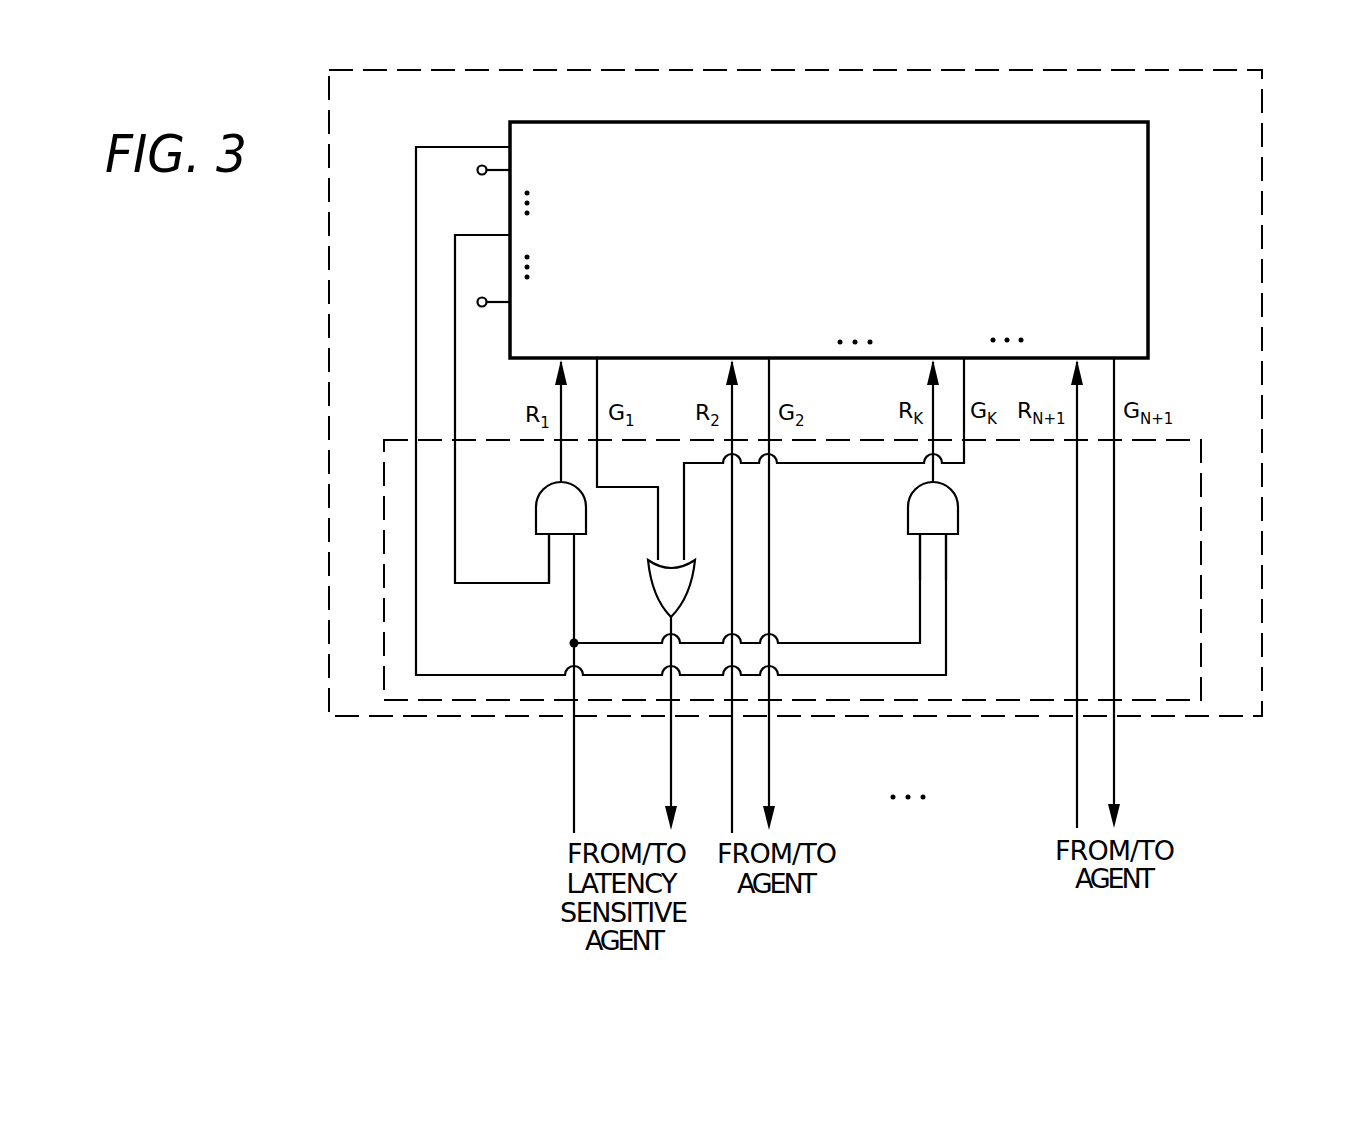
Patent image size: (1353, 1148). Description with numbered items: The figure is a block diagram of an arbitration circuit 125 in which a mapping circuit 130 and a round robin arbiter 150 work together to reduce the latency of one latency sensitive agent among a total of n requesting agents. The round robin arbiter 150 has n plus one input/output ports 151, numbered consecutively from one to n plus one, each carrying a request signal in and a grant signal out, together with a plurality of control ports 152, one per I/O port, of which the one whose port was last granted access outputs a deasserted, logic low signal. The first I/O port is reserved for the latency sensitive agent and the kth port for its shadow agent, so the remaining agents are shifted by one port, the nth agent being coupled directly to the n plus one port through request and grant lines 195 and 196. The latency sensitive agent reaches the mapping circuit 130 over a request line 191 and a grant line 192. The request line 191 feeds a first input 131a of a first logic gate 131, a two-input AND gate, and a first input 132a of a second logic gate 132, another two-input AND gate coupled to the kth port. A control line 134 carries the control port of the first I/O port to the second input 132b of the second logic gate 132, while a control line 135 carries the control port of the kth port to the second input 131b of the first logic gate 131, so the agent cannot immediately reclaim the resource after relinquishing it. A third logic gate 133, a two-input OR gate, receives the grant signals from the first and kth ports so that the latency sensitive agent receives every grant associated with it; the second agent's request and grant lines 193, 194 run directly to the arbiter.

The arbitration circuit 125 is at (1262, 230).
The mapping circuit 130 is at (1201, 475).
The first logic gate 131 is at (537, 507).
The first input of first logic gate 131a is at (575, 536).
The second input of first logic gate 131b is at (549, 536).
The second logic gate 132 is at (908, 515).
The first input of second logic gate 132a is at (915, 536).
The second input of second logic gate 132b is at (950, 536).
The third logic gate 133 is at (649, 578).
The control line 134 is at (416, 322).
The control line 135 is at (478, 234).
The round robin arbiter 150 is at (1067, 120).
The input/output ports 151 is at (806, 322).
The control ports 152 is at (562, 209).
The request line 191 is at (574, 752).
The grant line 192 is at (671, 793).
The request line from agent 2 193 is at (732, 783).
The grant line to agent 2 194 is at (769, 747).
The request line 195 is at (1077, 775).
The grant line 196 is at (1114, 775).